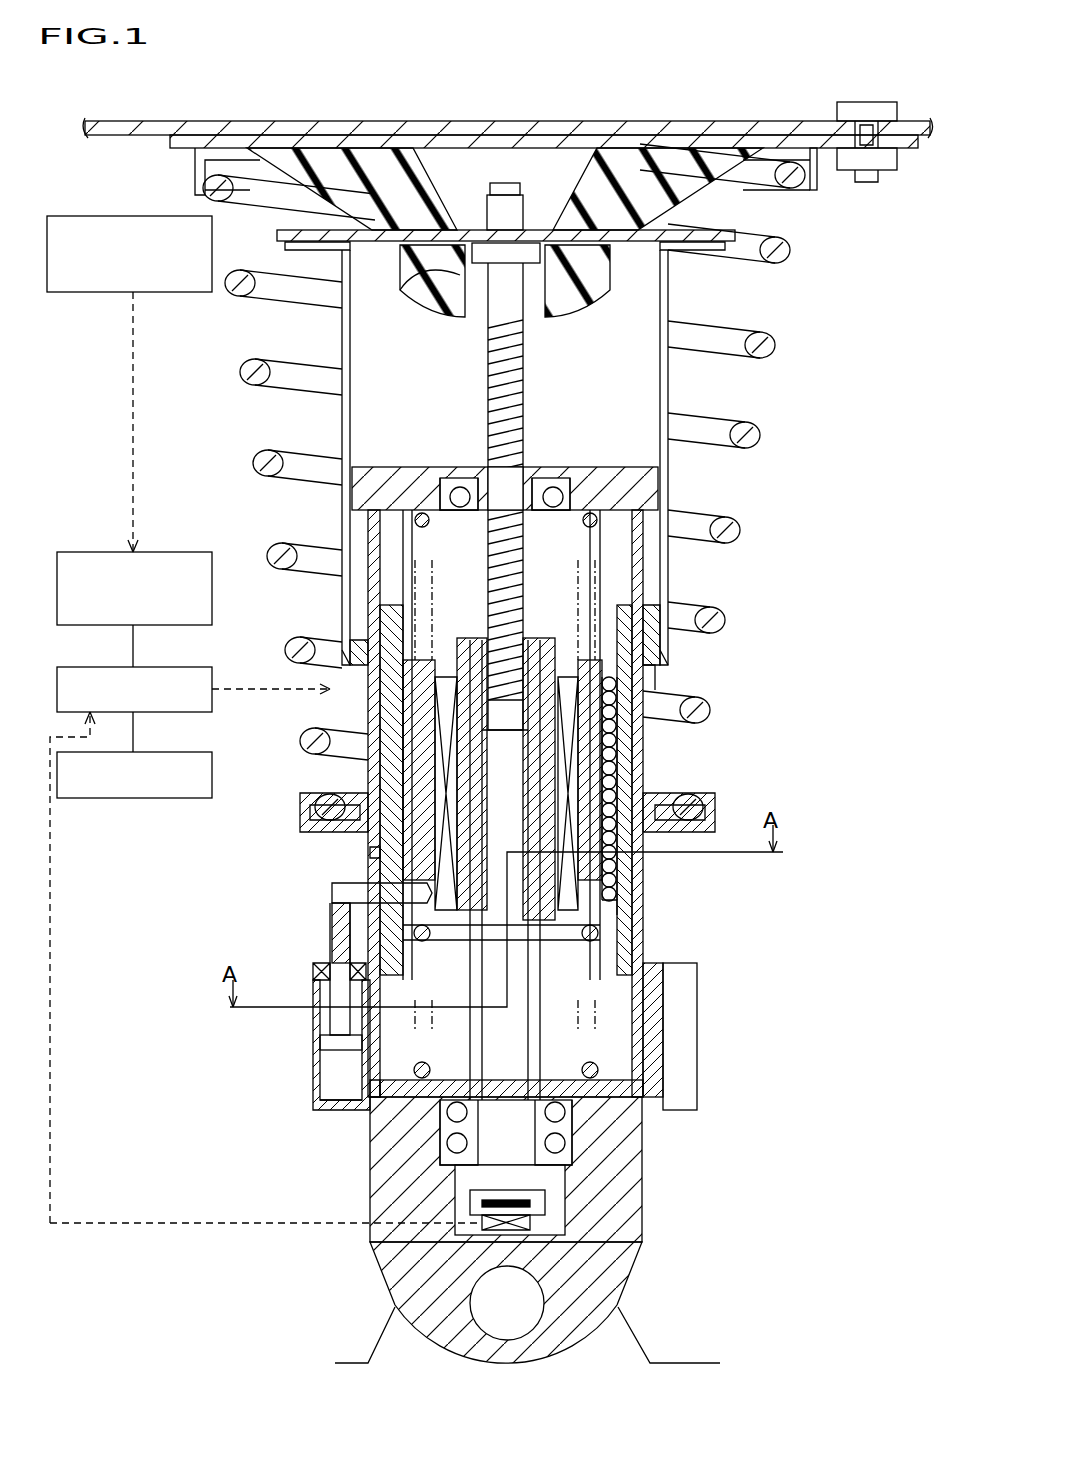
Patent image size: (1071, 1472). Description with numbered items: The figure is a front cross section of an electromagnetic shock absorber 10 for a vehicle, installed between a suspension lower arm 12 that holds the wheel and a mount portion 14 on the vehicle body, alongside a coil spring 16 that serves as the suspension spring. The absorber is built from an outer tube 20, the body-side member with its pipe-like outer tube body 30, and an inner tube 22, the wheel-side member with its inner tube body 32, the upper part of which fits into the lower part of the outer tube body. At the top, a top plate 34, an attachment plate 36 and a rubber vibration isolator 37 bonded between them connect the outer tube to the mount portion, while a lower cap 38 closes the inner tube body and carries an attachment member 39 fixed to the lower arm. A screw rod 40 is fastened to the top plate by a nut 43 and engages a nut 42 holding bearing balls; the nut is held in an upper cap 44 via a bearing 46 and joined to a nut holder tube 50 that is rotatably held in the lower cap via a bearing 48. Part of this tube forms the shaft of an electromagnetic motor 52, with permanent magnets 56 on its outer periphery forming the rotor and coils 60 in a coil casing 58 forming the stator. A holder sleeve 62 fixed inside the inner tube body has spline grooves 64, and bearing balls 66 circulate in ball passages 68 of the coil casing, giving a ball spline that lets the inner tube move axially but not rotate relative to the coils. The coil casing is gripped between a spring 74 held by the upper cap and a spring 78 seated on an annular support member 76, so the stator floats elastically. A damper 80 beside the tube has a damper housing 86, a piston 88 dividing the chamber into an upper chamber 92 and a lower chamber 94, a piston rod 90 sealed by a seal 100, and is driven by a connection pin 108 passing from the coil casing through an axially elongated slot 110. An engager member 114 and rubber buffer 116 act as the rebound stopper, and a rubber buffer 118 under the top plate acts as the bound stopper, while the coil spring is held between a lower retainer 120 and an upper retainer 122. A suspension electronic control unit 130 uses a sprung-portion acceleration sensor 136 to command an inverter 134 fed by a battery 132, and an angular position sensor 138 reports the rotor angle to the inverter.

The electromagnetic shock absorber 10 is at (852, 372).
The suspension lower arm 12 is at (667, 1363).
The mount portion 14 is at (285, 104).
The coil spring 16 is at (235, 292).
The outer tube 20 is at (790, 270).
The inner tube 22 is at (725, 925).
The outer tube body 30 is at (668, 372).
The inner tube body 32 is at (372, 1148).
The top plate 34 is at (735, 236).
The attachment plate 36 is at (895, 150).
The rubber vibration isolator 37 is at (700, 185).
The lower cap 38 is at (632, 1178).
The attachment member 39 is at (620, 1278).
The screw rod 40 is at (488, 365).
The nut 42 is at (530, 600).
The nut 43 is at (375, 205).
The upper cap 44 is at (610, 475).
The bearing 46 is at (440, 470).
The bearing 48 is at (580, 1115).
The nut holder tube 50 is at (643, 590).
The electromagnetic motor 52 is at (330, 673).
The permanent magnets 56 is at (580, 760).
The coil casing 58 is at (405, 715).
The coils 60 is at (435, 760).
The holder sleeve 62 is at (620, 633).
The spline grooves 64 is at (640, 672).
The bearing balls 66 is at (615, 905).
The ball passages 68 is at (612, 735).
The spring 74 is at (415, 535).
The support member 76 is at (680, 1075).
The spring 78 is at (600, 938).
The damper 80 is at (270, 885).
The damper housing 86 is at (330, 1090).
The piston 88 is at (330, 1042).
The piston rod 90 is at (335, 945).
The upper chamber 92 is at (325, 990).
The lower chamber 94 is at (310, 1113).
The seal 100 is at (322, 960).
The connection pin 108 is at (360, 890).
The slot 110 is at (378, 852).
The engager member 114 is at (345, 630).
The rubber buffer 116 is at (650, 498).
The rubber buffer 118 is at (590, 285).
The lower retainer 120 is at (705, 818).
The upper retainer 122 is at (817, 180).
The suspension electronic control unit 130 is at (155, 550).
The battery 132 is at (175, 800).
The inverter 134 is at (170, 666).
The sprung-portion acceleration sensor 136 is at (90, 215).
The angular position sensor 138 is at (545, 1215).